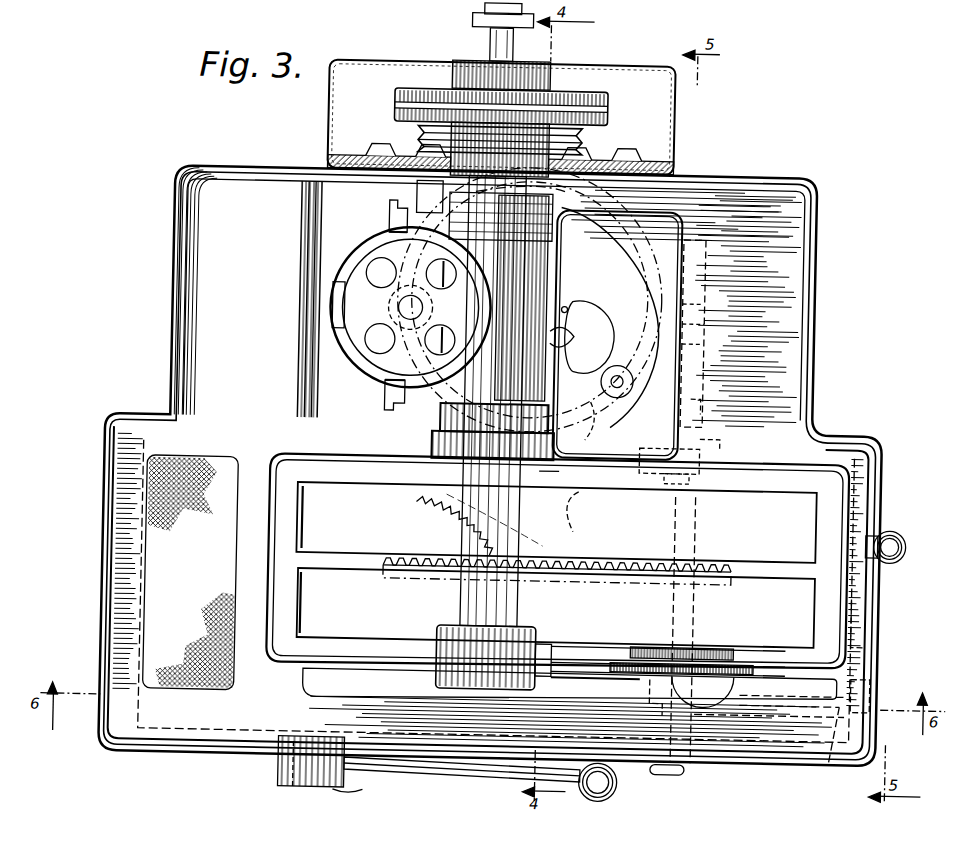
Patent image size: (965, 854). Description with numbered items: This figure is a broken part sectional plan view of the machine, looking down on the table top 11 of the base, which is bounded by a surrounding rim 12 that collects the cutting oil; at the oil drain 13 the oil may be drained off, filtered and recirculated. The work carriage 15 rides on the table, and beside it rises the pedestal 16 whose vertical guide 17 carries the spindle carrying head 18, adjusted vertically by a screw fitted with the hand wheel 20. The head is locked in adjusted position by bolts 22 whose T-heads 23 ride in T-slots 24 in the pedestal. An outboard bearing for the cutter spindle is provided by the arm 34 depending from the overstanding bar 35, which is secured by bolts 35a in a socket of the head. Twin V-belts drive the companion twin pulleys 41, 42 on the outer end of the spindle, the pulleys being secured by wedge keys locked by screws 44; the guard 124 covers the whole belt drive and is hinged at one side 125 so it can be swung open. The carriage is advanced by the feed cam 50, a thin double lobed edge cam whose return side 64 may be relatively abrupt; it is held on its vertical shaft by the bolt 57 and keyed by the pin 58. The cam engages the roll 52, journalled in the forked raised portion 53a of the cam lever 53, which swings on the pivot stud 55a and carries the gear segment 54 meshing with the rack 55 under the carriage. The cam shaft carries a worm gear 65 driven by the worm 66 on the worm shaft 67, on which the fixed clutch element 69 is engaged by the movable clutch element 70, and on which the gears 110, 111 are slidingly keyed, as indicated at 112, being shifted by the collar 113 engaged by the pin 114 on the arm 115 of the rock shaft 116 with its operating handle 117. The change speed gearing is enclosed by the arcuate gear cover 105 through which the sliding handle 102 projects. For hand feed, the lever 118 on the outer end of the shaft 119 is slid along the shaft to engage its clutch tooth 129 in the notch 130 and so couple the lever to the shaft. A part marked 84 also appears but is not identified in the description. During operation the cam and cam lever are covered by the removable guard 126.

The table top 11 is at (242, 740).
The surrounding rim 12 is at (898, 528).
The oil drain 13 is at (148, 490).
The work carriage 15 is at (557, 580).
The pedestal 16 is at (282, 430).
The vertical guide 17 is at (370, 370).
The spindle carrying head 18 is at (479, 431).
The hand wheel 20 is at (352, 263).
The bolts 22 is at (484, 209).
The T-heads 23 is at (385, 208).
The T-slots 24 is at (388, 228).
The arm 34 is at (443, 632).
The overstanding bar 35 is at (521, 601).
The bolts 35a is at (560, 200).
The twin pulleys 41 is at (602, 98).
The twin pulleys 42 is at (412, 139).
The screws 44 is at (501, 89).
The feed cam 50 is at (589, 337).
The cam roll 52 is at (646, 345).
The cam lever 53 is at (580, 508).
The forked raised portion 53a is at (584, 421).
The gear segment 54 is at (430, 518).
The rack 55 is at (410, 556).
The pivot stud 55a is at (560, 474).
The bolt 57 is at (566, 325).
The pin 58 is at (565, 306).
The return side of cam 64 is at (566, 290).
The worm gear 65 is at (529, 299).
The worm 66 is at (703, 345).
The worm shaft 67 is at (702, 397).
The clutch element 69 is at (715, 437).
The movable clutch element 70 is at (724, 465).
The pin 84 is at (684, 768).
The sliding handle 102 is at (896, 554).
The arcuate gear cover 105 is at (880, 598).
The gear 110 is at (760, 664).
The gear 111 is at (728, 644).
The sliding key connection 112 is at (672, 630).
The collar 113 is at (663, 690).
The pin 114 is at (727, 703).
The arm 115 is at (769, 712).
The rock shaft 116 is at (852, 687).
The operating handle 117 is at (842, 748).
The hand feed lever 118 is at (452, 774).
The shaft 119 is at (358, 790).
The guard 124 is at (646, 62).
The hinge 125 is at (324, 170).
The removable guard 126 is at (703, 236).
The clutch tooth 129 is at (300, 796).
The notch 130 is at (285, 770).